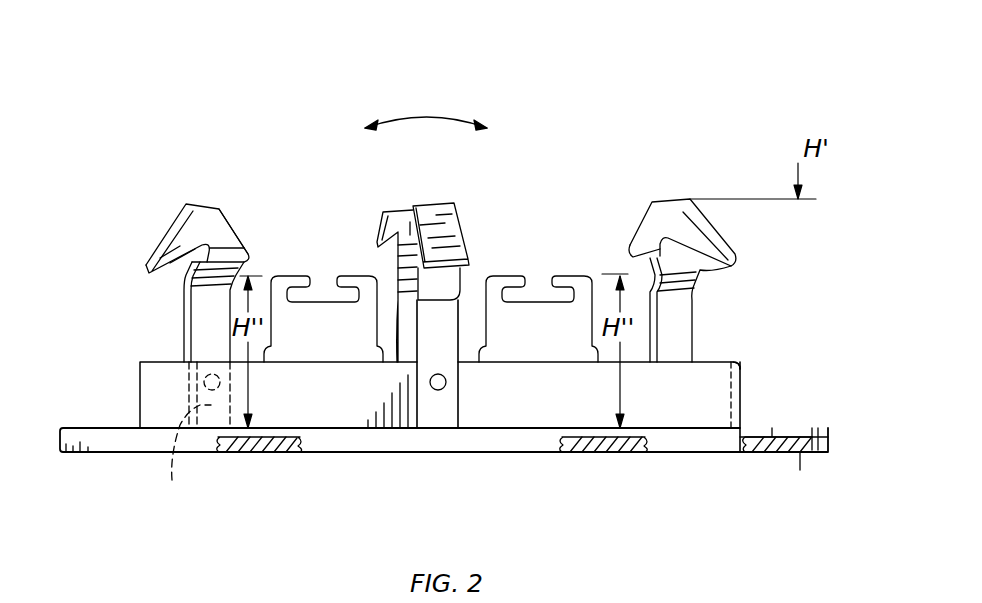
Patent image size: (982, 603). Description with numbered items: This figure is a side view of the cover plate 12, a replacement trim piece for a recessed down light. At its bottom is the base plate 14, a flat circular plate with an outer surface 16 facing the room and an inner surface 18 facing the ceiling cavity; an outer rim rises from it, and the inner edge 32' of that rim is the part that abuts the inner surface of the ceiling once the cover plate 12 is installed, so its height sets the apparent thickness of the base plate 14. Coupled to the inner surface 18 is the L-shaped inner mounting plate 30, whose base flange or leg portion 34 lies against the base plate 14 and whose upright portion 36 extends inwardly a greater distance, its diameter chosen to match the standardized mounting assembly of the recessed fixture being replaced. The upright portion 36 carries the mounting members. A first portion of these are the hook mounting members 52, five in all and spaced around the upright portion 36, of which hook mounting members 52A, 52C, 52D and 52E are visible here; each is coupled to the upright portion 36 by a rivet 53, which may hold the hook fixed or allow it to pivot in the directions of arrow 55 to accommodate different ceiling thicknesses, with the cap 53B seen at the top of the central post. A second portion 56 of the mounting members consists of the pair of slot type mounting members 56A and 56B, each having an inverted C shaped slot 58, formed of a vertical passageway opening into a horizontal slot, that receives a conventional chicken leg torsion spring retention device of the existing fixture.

The cover plate 12 is at (830, 441).
The base plate 14 is at (660, 453).
The outer surface 16 is at (738, 453).
The inner surface 18 is at (815, 427).
The inner mounting plate 30 is at (666, 401).
The inner edge of the outer rim 32' is at (643, 463).
The base flange or leg portion 34 is at (768, 427).
The upright portion 36 is at (742, 363).
The hook mounting members 52 is at (203, 203).
The hook mounting member 52A is at (172, 481).
The hook mounting member 52C is at (672, 199).
The hook mounting member 52D is at (398, 212).
The hook mounting member 52E is at (242, 228).
The rivet 53 is at (446, 382).
The central post cap 53B is at (440, 205).
The arrow 55 is at (427, 118).
The second portion of the plurality of mounting members 56 is at (566, 268).
The slot type mounting member 56A is at (538, 319).
The slot type mounting member 56B is at (305, 341).
The inverted C shaped slot 58 is at (537, 282).